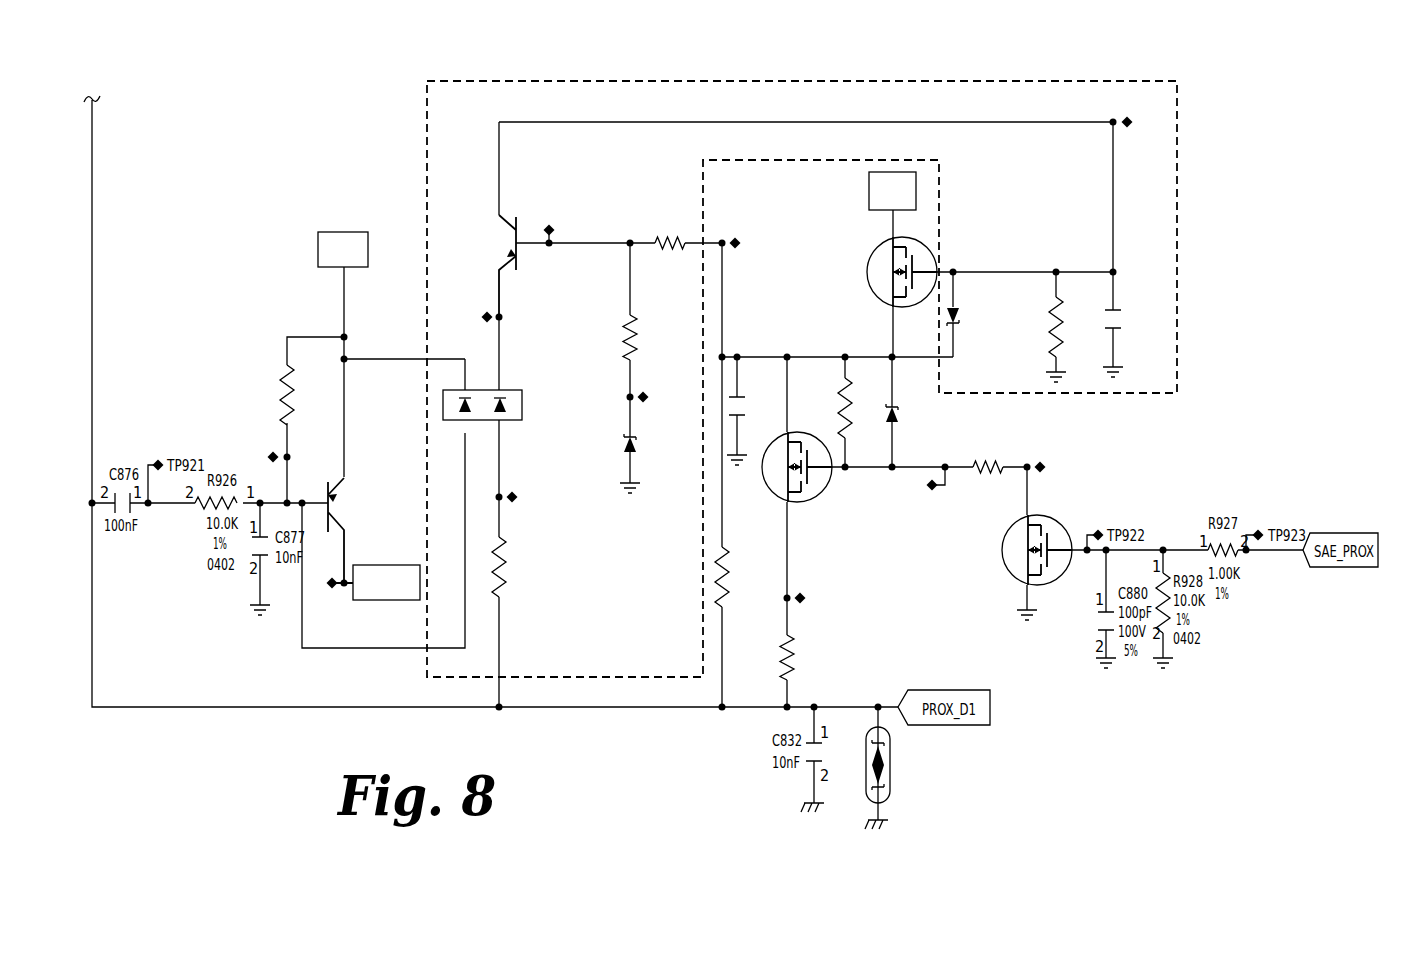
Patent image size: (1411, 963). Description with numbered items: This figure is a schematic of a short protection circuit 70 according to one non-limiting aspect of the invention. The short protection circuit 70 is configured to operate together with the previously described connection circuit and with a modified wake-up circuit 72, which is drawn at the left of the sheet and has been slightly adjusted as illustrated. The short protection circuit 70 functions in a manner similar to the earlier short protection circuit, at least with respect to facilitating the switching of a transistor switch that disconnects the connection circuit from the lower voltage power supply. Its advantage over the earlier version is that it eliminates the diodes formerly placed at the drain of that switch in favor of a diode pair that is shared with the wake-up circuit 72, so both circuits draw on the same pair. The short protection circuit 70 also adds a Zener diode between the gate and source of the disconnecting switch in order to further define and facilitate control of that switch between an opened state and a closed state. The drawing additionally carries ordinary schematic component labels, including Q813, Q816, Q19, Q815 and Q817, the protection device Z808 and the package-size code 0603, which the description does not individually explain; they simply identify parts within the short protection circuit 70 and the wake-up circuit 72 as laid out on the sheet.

The short protection circuit 70 is at (805, 80).
The modified wake-up circuit 72 is at (292, 313).
The footprint size label of input rail 0603 is at (491, 401).
The PNP transistor Q813 is at (483, 256).
The PNP transistor Q816 is at (365, 523).
The P-channel MOSFET Q19 is at (881, 283).
The P-channel MOSFET Q815 is at (821, 477).
The N-channel MOSFET Q817 is at (1013, 543).
The bidirectional TVS diode Z808 is at (901, 768).